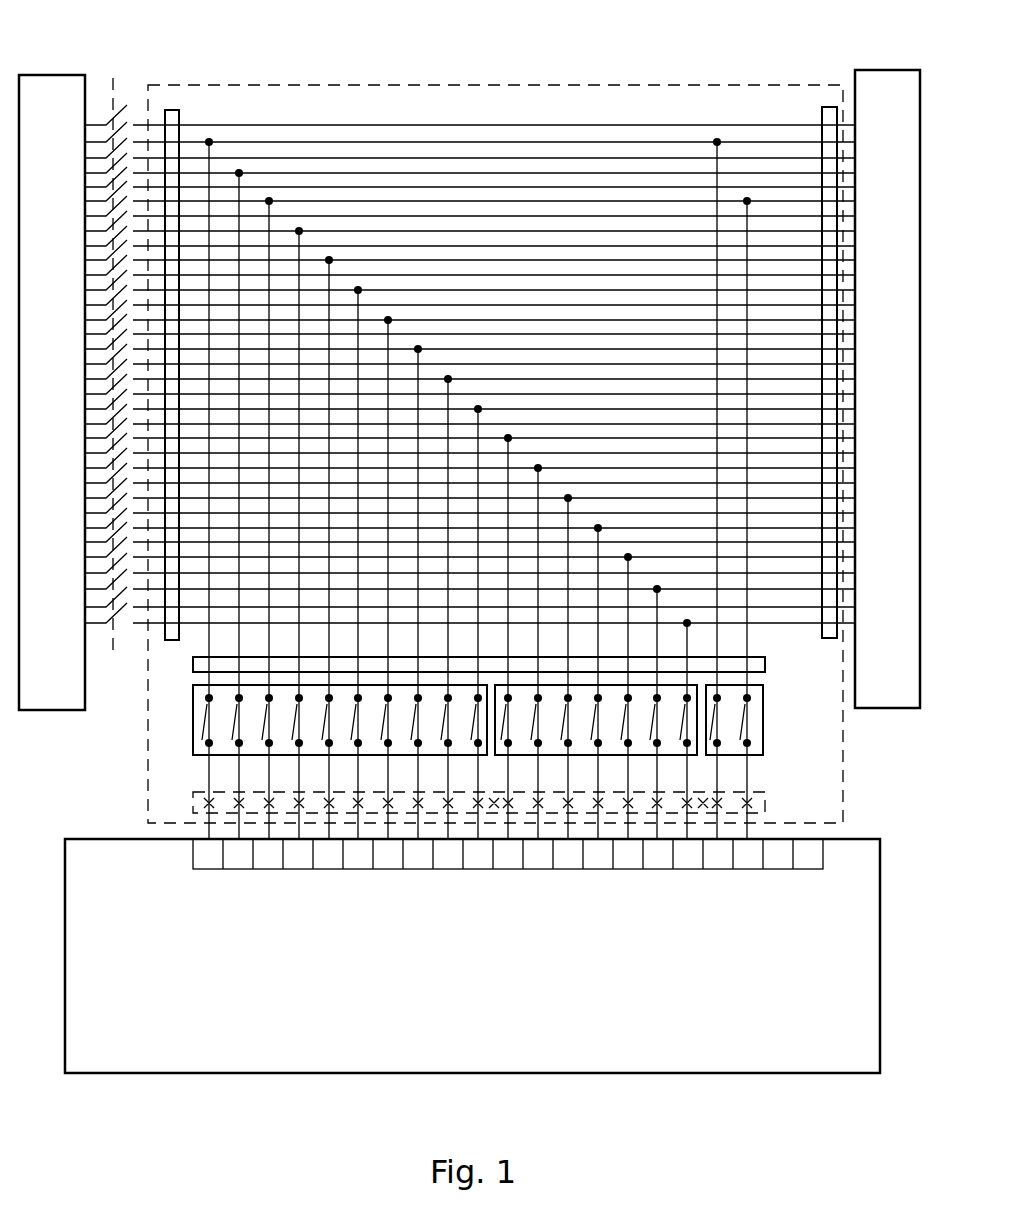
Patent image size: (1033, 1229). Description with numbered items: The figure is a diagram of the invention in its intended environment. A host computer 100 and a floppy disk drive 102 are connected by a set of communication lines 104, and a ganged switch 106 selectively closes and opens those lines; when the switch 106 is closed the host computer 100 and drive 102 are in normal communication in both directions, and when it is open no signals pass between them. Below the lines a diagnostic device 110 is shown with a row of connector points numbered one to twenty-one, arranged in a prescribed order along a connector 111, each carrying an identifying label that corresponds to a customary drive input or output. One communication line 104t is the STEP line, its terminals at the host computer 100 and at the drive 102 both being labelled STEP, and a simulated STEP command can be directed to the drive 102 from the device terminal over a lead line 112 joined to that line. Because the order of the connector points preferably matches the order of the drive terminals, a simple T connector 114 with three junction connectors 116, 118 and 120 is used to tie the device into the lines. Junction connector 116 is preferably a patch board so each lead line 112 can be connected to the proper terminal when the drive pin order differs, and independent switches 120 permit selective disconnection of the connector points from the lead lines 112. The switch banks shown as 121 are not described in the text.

The host computer 100 is at (45, 75).
The floppy disk drive 102 is at (887, 70).
The communication lines 104 is at (233, 157).
The communication line (STEP line) 104t is at (848, 409).
The ganged switch 106 is at (108, 75).
The diagnostic device 110 is at (880, 1073).
The connector 111 is at (825, 850).
The lead line 112 is at (479, 625).
The T connector 114 is at (600, 85).
The junction connector (patch board) 116 is at (171, 110).
The junction connector 118 is at (766, 664).
The junction connector / switches 120 is at (828, 107).
The switch banks 121 is at (193, 720).